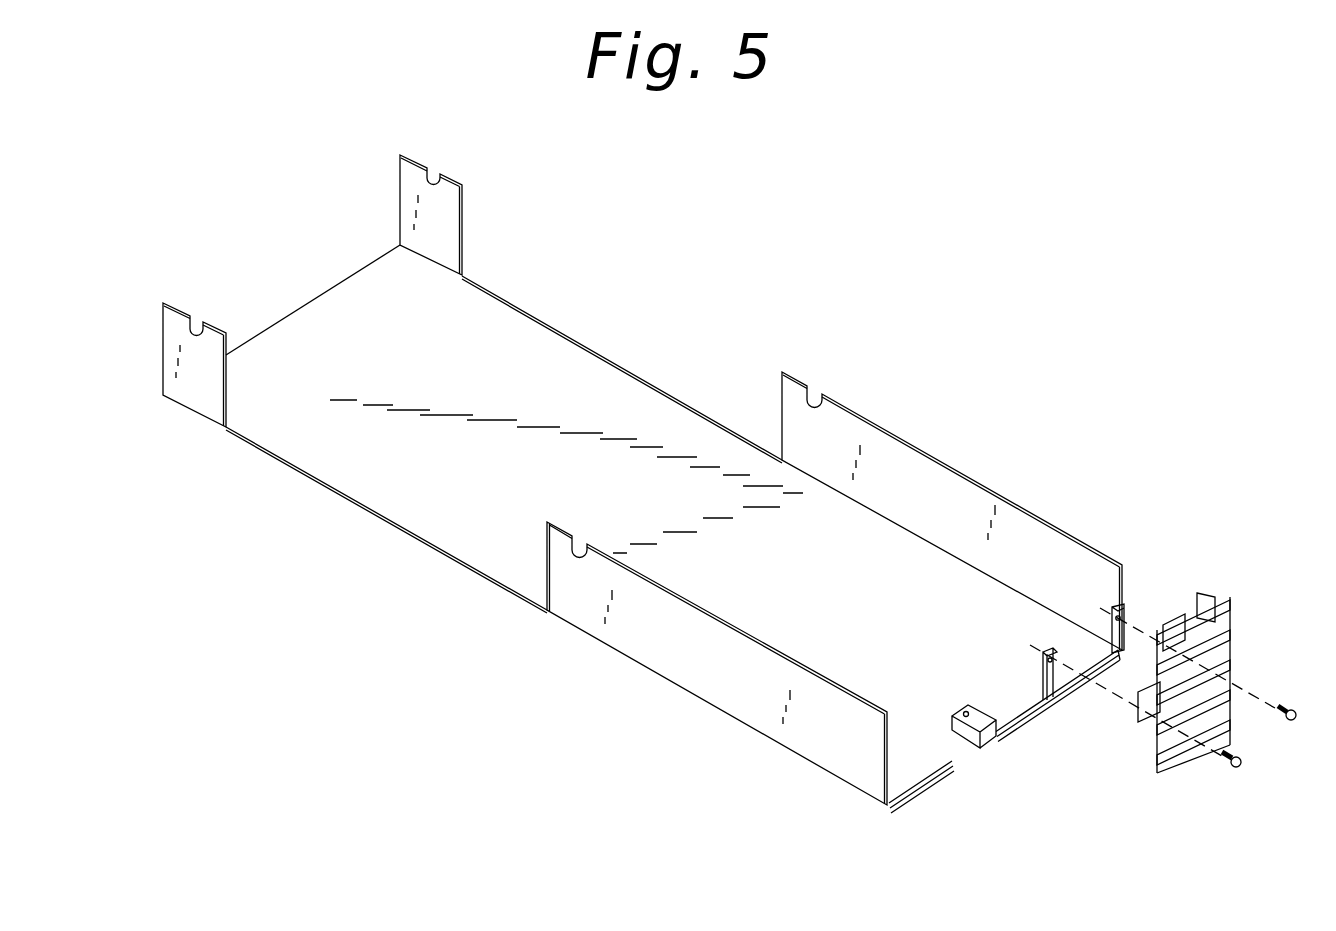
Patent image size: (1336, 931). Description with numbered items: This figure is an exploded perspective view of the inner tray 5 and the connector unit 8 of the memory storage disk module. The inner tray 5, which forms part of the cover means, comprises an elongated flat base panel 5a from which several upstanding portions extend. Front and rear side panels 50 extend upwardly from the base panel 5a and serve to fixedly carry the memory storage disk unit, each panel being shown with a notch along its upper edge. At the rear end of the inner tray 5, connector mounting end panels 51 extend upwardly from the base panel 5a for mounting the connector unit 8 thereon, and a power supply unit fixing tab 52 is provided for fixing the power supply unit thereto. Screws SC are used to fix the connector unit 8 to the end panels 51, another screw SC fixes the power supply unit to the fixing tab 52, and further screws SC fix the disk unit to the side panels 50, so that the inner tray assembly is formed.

The inner tray 5 is at (592, 350).
The elongated flat base panel 5a is at (403, 507).
The front and rear side panels 50 is at (455, 207).
The connector mounting end panels 51 is at (1128, 617).
The power supply unit fixing tab 52 is at (1000, 728).
The connector unit 8 is at (1215, 597).
The screws SC is at (1290, 725).